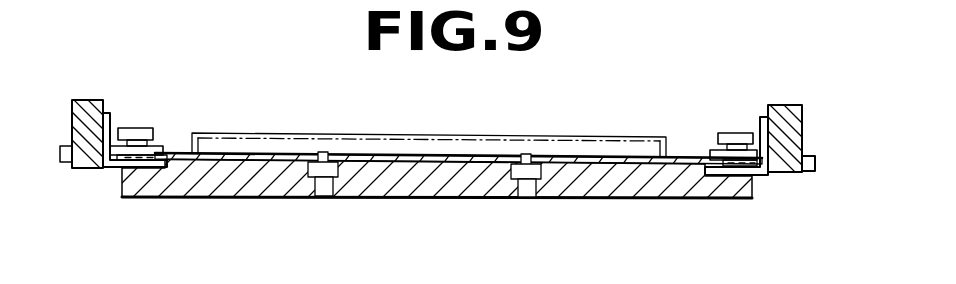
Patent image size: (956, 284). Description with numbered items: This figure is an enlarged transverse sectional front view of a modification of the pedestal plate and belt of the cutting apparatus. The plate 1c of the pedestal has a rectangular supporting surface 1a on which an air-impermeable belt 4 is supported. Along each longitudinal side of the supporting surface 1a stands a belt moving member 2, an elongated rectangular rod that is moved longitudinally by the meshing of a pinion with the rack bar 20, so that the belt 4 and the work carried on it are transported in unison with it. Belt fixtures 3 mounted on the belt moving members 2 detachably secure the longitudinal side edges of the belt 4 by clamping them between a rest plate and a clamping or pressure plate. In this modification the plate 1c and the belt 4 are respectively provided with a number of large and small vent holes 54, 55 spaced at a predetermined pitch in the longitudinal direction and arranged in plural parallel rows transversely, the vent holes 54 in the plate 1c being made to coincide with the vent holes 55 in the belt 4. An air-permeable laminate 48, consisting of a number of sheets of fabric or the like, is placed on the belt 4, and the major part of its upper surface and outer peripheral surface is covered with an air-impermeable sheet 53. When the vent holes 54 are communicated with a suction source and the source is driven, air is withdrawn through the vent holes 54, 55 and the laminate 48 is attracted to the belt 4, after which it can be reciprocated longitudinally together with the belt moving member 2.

The supporting surface 1a is at (688, 160).
The plate 1c is at (645, 182).
The belt moving member 2 is at (91, 100).
The belt fixture 3 is at (136, 128).
The belt 4 is at (403, 154).
The rack bar 20 is at (807, 173).
The laminate 48 is at (219, 138).
The air-impermeable sheet 53 is at (291, 138).
The vent holes 54 is at (324, 188).
The vent holes 55 is at (322, 158).